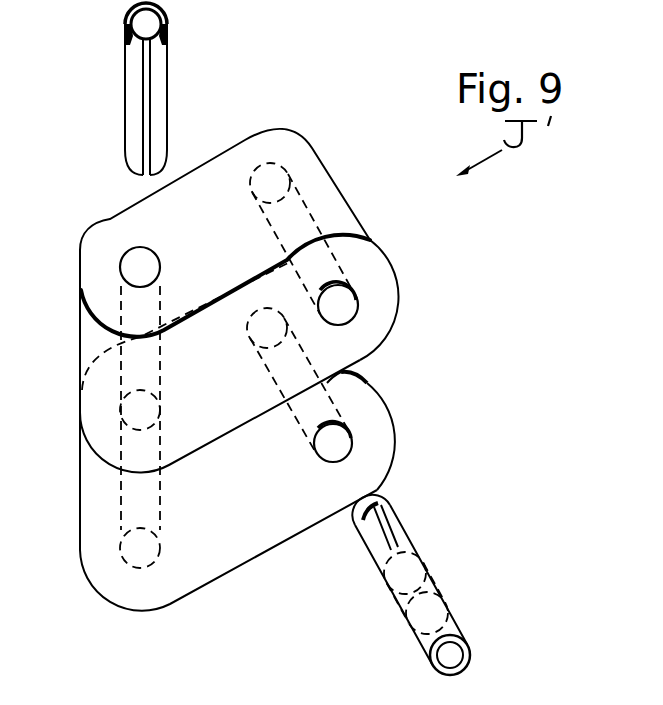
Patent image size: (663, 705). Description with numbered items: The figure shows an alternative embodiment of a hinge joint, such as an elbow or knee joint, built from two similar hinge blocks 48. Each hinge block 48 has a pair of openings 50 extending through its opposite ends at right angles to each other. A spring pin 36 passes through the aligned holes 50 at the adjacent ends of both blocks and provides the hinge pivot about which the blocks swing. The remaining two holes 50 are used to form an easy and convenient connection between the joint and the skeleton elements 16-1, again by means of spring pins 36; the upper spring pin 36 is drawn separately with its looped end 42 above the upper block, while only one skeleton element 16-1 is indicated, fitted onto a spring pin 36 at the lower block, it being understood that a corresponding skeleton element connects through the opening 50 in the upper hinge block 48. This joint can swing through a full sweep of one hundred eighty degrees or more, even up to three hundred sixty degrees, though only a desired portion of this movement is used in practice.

The hinge block 48 is at (93, 336).
The opening 50 is at (127, 266).
The spring pin 36 is at (134, 123).
The eye of split pin 42 is at (145, 68).
The skeleton element 16-1 is at (432, 663).